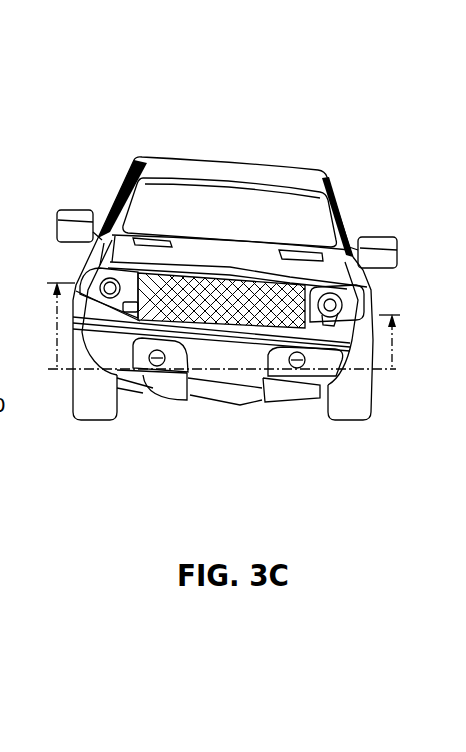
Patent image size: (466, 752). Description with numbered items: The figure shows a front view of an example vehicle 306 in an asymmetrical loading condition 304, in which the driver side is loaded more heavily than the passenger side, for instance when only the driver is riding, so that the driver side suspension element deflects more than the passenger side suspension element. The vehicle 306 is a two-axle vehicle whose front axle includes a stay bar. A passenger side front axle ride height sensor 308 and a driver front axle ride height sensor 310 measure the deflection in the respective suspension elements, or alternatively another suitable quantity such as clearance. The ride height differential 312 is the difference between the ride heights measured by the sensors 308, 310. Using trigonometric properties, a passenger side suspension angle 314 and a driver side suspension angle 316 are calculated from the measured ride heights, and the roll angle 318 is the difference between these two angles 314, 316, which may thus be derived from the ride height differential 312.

The asymmetrical loading condition 304 is at (298, 92).
The vehicle 306 is at (320, 172).
The passenger side front axle ride height sensor 308 is at (57, 392).
The driver front axle ride height sensor 310 is at (379, 384).
The ride height differential 312 is at (272, 478).
The passenger side suspension angle 314 is at (187, 372).
The driver side suspension angle 316 is at (263, 375).
The roll angle 318 is at (272, 530).